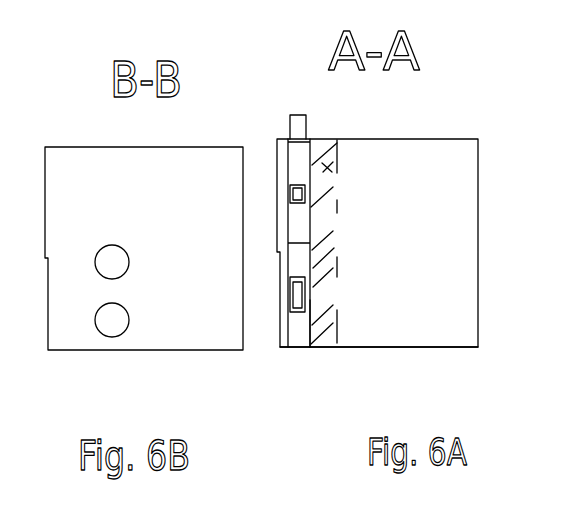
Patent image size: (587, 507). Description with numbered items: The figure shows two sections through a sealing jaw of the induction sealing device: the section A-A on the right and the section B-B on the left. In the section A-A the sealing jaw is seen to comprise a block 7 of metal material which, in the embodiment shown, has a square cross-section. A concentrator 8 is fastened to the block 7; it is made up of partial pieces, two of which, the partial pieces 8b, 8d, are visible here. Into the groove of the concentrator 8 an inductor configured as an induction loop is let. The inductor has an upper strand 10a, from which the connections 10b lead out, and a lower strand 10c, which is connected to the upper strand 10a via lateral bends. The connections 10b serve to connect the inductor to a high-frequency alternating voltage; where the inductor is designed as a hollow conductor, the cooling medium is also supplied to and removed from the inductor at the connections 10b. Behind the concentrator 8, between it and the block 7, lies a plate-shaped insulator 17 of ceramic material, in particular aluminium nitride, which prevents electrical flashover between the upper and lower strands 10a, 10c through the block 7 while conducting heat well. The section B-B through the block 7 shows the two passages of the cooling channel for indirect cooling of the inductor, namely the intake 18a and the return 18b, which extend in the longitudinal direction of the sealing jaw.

In FIG. 6A, the block 7 is at (462, 203).
In FIG. 6A, the concentrator 8 is at (312, 227).
In FIG. 6A, the partial piece 8b is at (300, 335).
In FIG. 6A, the partial piece 8d is at (311, 168).
In FIG. 6A, the upper strand 10a is at (300, 190).
In FIG. 6A, the connections 10b is at (302, 120).
In FIG. 6A, the lower strand 10c is at (302, 293).
In FIG. 6A, the plate-shaped insulator 17 is at (335, 322).
In FIG. 6B, the intake 18a is at (110, 322).
In FIG. 6B, the return 18b is at (110, 260).